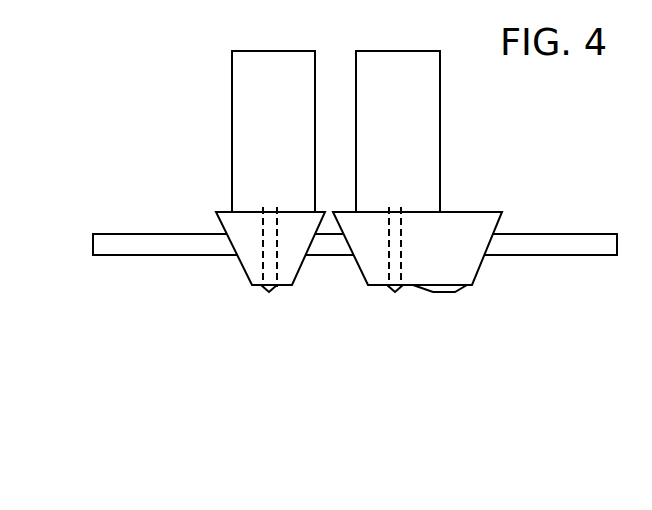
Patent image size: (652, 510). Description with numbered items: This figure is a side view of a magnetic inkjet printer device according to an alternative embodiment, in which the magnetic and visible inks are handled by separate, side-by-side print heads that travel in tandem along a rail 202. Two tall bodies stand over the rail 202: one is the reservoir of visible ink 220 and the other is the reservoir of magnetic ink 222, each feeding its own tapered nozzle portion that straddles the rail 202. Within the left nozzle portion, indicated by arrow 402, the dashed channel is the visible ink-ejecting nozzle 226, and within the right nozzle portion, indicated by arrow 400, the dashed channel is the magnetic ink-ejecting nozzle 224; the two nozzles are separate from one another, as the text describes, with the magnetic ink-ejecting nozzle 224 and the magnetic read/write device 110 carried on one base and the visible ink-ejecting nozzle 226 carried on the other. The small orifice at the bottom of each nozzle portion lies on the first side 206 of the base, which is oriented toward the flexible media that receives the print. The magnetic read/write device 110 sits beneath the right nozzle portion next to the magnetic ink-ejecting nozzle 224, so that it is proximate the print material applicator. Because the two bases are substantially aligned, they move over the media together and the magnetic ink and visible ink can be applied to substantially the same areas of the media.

The magnetic read/write device 110 is at (455, 290).
The rail 202 is at (166, 247).
The first side 206 is at (290, 286).
The reservoir of visible ink 220 is at (295, 127).
The reservoir of magnetic ink 222 is at (420, 127).
The magnetic ink-ejecting nozzle 224 is at (394, 286).
The visible ink-ejecting nozzle 226 is at (264, 287).
The second nozzle 400 is at (487, 212).
The first nozzle 402 is at (213, 211).